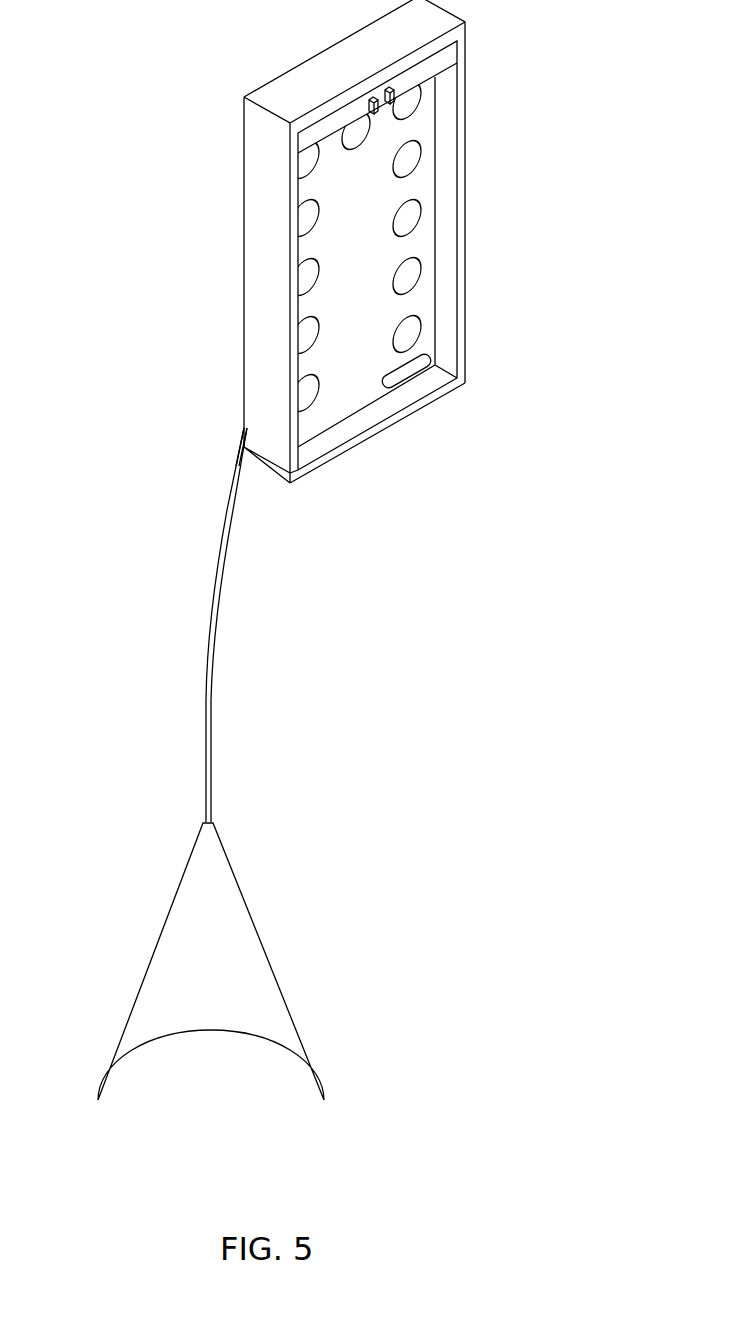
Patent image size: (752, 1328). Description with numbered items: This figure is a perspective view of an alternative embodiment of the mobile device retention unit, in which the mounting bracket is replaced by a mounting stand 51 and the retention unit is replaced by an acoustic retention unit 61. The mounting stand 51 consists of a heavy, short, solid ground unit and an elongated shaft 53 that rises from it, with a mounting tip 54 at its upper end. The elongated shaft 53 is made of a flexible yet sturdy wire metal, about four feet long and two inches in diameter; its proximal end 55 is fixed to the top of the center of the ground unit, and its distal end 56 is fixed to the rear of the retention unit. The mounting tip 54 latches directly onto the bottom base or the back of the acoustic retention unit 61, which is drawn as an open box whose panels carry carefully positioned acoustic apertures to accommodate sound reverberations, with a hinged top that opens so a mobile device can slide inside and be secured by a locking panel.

The mounting stand 51 is at (105, 395).
The elongated shaft 53 is at (208, 690).
The mounting tip 54 is at (245, 425).
The proximal end 55 is at (219, 822).
The distal end 56 is at (231, 455).
The acoustic retention unit 61 is at (198, 80).